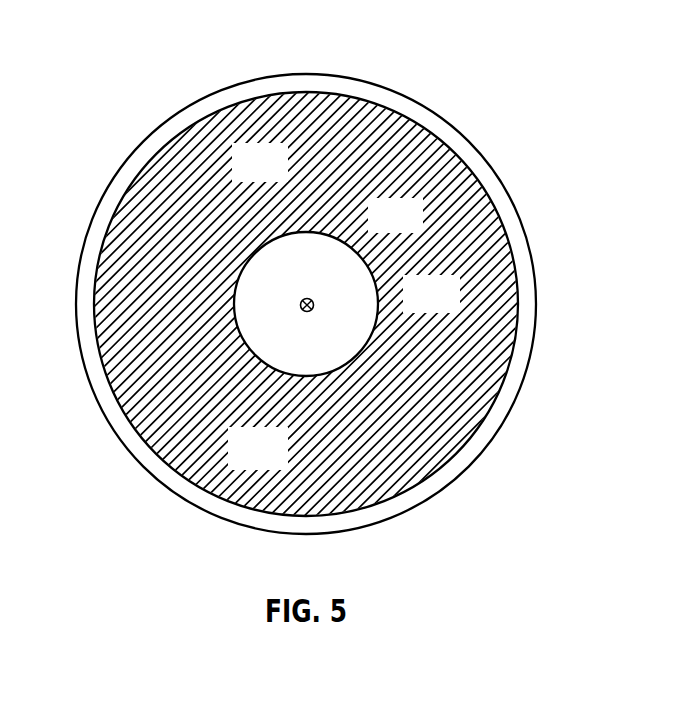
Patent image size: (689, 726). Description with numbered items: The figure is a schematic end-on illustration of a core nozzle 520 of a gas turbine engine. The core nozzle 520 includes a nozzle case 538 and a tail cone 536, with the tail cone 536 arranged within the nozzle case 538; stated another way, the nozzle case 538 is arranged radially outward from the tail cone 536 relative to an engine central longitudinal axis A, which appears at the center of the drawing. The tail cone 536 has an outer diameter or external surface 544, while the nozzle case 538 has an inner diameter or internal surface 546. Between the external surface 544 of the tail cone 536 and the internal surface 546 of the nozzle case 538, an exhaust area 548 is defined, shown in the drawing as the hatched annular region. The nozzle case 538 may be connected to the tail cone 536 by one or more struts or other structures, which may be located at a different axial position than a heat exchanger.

The core nozzle 520 is at (306, 304).
The nozzle case 538 is at (155, 142).
The internal surface 546 is at (280, 96).
The external surface 544 is at (334, 234).
The tail cone 536 is at (368, 315).
The exhaust area 548 is at (282, 462).
The engine central longitudinal axis A is at (307, 297).